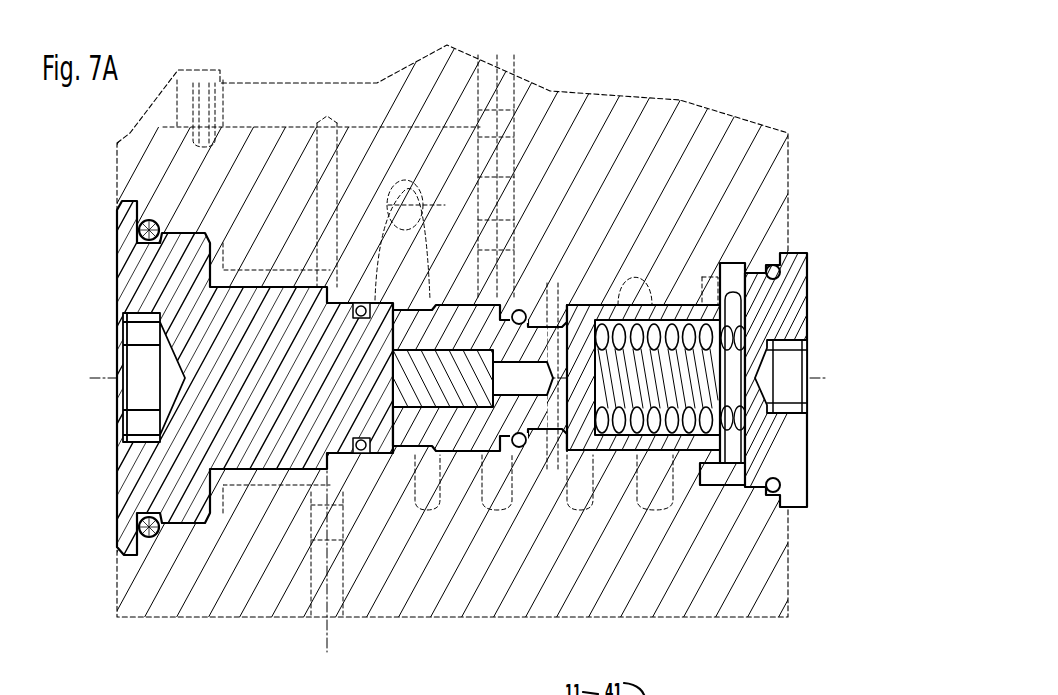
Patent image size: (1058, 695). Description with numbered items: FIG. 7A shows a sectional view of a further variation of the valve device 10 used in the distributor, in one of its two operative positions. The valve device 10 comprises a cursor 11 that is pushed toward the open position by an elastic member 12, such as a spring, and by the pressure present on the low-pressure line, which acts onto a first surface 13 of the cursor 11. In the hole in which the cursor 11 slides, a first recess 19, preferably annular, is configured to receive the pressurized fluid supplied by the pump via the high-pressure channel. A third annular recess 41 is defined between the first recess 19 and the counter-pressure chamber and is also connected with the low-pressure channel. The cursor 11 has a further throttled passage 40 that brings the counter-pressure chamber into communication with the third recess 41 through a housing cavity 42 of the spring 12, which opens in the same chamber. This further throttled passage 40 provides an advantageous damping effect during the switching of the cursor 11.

The valve assembly 10 is at (808, 201).
The cursor 11 is at (584, 340).
The elastic member 12 is at (693, 363).
The first surface 13 is at (732, 320).
The first recess 19 is at (560, 485).
The further throttled passage 40 is at (633, 458).
The third annular recess 41 is at (648, 305).
The housing cavity 42 is at (688, 465).